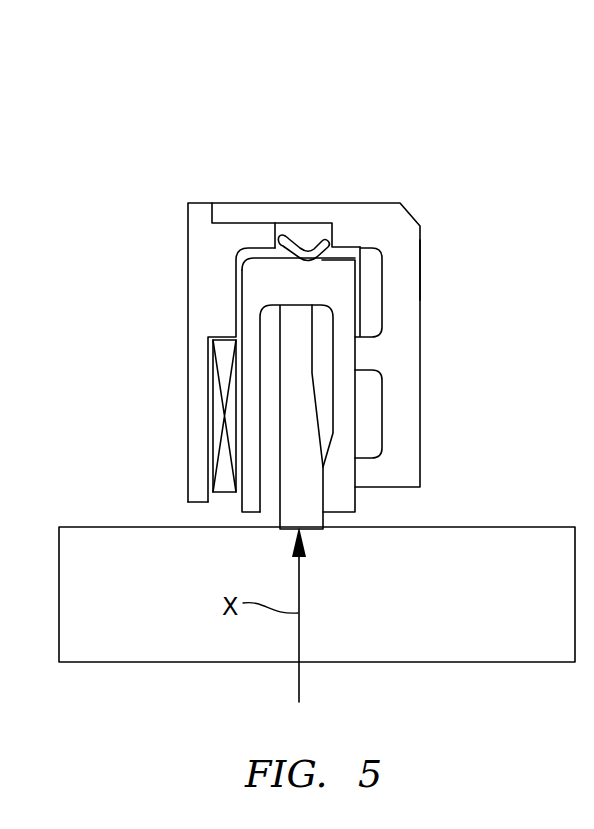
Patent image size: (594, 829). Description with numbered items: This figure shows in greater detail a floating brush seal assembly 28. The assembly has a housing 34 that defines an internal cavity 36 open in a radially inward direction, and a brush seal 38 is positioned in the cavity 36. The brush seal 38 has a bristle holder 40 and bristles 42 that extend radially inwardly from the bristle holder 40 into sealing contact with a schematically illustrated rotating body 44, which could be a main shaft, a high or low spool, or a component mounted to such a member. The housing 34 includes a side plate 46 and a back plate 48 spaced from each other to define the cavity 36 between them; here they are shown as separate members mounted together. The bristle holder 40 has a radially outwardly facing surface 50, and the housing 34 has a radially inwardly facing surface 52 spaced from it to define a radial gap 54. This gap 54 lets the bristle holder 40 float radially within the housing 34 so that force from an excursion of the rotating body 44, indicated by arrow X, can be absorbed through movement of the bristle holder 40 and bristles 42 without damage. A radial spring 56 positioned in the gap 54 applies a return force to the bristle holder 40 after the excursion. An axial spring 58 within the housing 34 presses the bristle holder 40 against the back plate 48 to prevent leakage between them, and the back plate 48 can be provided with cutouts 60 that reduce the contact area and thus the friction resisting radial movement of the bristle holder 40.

The floating brush seal assembly 28 is at (436, 158).
The housing 34 is at (421, 301).
The internal cavity 36 is at (348, 245).
The brush seal 38 is at (363, 432).
The bristle holder 40 is at (258, 265).
The bristles 42 is at (293, 473).
The rotating body 44 is at (540, 527).
The side plate 46 is at (210, 251).
The back plate 48 is at (408, 265).
The radially outwardly facing surface 50 is at (327, 262).
The radially inwardly facing surface 52 is at (310, 232).
The radial gap 54 is at (299, 235).
The radial spring 56 is at (292, 250).
The axial spring 58 is at (222, 412).
The cutouts 60 is at (378, 248).